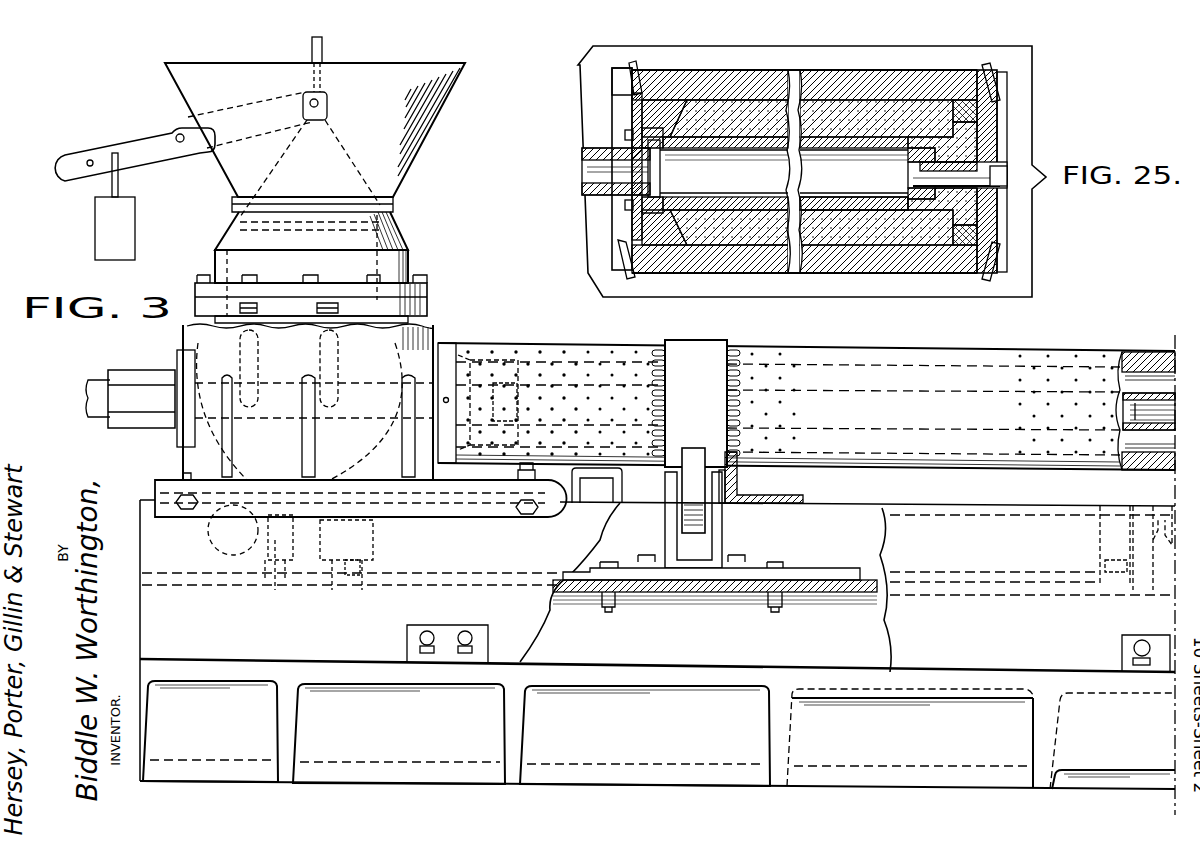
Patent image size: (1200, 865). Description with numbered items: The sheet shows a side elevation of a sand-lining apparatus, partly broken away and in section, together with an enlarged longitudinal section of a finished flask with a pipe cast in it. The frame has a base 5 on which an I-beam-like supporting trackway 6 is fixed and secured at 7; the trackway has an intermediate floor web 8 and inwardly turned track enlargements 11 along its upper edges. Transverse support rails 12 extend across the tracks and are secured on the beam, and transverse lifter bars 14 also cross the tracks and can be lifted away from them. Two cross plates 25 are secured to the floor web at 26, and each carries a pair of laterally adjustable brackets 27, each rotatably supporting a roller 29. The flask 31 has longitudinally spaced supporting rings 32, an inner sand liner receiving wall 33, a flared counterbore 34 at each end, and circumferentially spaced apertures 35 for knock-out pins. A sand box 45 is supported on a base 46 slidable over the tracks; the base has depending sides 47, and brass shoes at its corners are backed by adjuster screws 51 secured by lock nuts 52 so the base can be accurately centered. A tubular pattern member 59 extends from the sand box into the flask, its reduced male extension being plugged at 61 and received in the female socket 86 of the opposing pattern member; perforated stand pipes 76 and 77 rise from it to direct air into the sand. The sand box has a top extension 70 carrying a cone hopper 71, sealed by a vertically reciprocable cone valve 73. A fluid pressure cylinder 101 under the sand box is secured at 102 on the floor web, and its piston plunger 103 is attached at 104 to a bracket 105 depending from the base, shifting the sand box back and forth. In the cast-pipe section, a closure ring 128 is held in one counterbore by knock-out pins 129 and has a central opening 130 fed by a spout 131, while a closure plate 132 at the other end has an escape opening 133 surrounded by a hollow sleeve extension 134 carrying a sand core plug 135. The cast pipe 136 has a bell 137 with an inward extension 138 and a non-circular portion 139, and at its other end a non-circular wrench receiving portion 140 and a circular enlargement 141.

In FIG. 3, the base 5 is at (660, 677).
In FIG. 3, the supporting trackway 6 is at (890, 628).
In FIG. 3, the securing means 7 is at (407, 638).
In FIG. 3, the floor web 8 is at (690, 590).
In FIG. 3, the track enlargements 11 is at (650, 503).
In FIG. 3, the transverse support rails 12 is at (773, 483).
In FIG. 3, the transverse lifter bars 14 is at (605, 475).
In FIG. 3, the cross plates 25 is at (700, 572).
In FIG. 3, the securing means 26 is at (785, 562).
In FIG. 3, the brackets 27 is at (718, 538).
In FIG. 3, the roller 29 is at (695, 457).
In FIG. 3, the flask 31 is at (992, 347).
In FIG. 25, the flask 31 is at (797, 262).
In FIG. 3, the supporting rings 32 is at (692, 352).
In FIG. 3, the sand liner receiving wall 33 is at (1048, 363).
In FIG. 25, the sand liner receiving wall 33 is at (892, 99).
In FIG. 25, the flared counterbore 34 is at (616, 227).
In FIG. 25, the apertures 35 is at (614, 80).
In FIG. 3, the sand box 45 is at (423, 328).
In FIG. 3, the base 46 is at (272, 486).
In FIG. 3, the depending sides 47 is at (483, 507).
In FIG. 3, the adjuster screw 51 is at (185, 500).
In FIG. 3, the lock nuts 52 is at (175, 398).
In FIG. 3, the tubular pattern member 59 is at (550, 387).
In FIG. 3, the plug 61 is at (1113, 410).
In FIG. 3, the top extension 70 is at (412, 263).
In FIG. 3, the cone hopper 71 is at (420, 115).
In FIG. 3, the cone valve 73 is at (333, 167).
In FIG. 3, the stand pipes 76 is at (330, 372).
In FIG. 3, the stand pipes 77 is at (253, 370).
In FIG. 3, the female socket 86 is at (1162, 397).
In FIG. 3, the fluid pressure cylinder 101 is at (465, 572).
In FIG. 3, the securing means 102 is at (348, 596).
In FIG. 3, the piston plunger 103 is at (268, 572).
In FIG. 3, the attachment 104 is at (225, 540).
In FIG. 3, the bracket 105 is at (237, 513).
In FIG. 25, the closure ring 128 is at (640, 116).
In FIG. 25, the knock-out pins 129 is at (627, 97).
In FIG. 25, the central opening 130 is at (662, 175).
In FIG. 25, the spout 131 is at (598, 190).
In FIG. 25, the closure plate 132 is at (990, 112).
In FIG. 25, the central escape opening 133 is at (985, 160).
In FIG. 25, the hollow sleeve extension 134 is at (910, 176).
In FIG. 25, the sand core plug 135 is at (987, 213).
In FIG. 25, the pipe 136 is at (757, 200).
In FIG. 25, the bell 137 is at (920, 208).
In FIG. 25, the inward extension 138 is at (945, 210).
In FIG. 25, the non-circular portion 139 is at (836, 210).
In FIG. 25, the non-circular wrench receiving portion 140 is at (725, 135).
In FIG. 25, the circular enlargement 141 is at (678, 130).